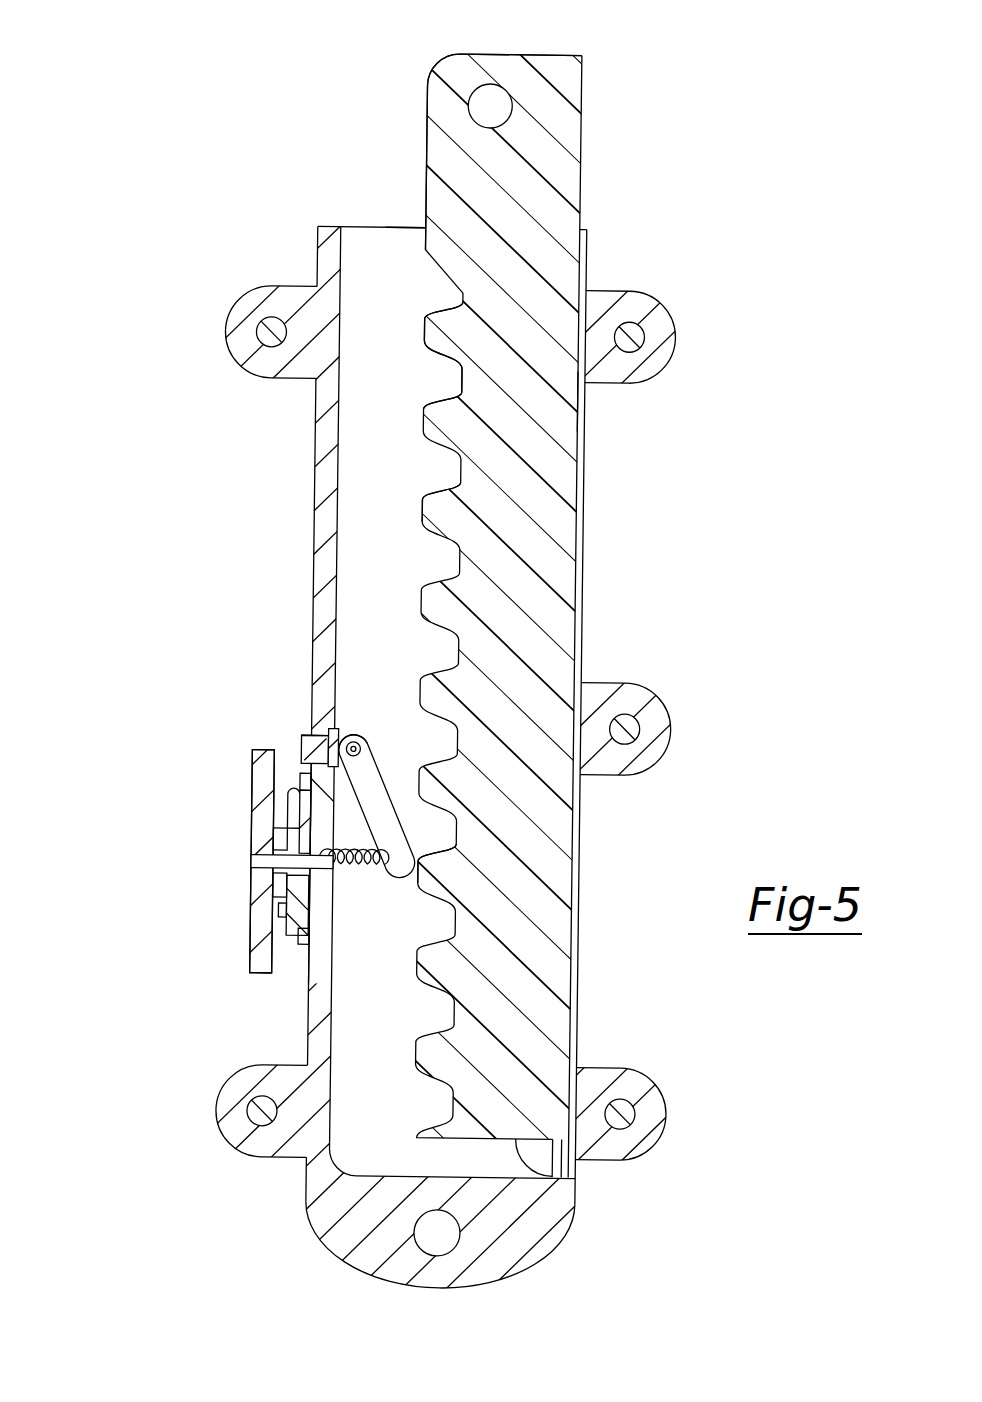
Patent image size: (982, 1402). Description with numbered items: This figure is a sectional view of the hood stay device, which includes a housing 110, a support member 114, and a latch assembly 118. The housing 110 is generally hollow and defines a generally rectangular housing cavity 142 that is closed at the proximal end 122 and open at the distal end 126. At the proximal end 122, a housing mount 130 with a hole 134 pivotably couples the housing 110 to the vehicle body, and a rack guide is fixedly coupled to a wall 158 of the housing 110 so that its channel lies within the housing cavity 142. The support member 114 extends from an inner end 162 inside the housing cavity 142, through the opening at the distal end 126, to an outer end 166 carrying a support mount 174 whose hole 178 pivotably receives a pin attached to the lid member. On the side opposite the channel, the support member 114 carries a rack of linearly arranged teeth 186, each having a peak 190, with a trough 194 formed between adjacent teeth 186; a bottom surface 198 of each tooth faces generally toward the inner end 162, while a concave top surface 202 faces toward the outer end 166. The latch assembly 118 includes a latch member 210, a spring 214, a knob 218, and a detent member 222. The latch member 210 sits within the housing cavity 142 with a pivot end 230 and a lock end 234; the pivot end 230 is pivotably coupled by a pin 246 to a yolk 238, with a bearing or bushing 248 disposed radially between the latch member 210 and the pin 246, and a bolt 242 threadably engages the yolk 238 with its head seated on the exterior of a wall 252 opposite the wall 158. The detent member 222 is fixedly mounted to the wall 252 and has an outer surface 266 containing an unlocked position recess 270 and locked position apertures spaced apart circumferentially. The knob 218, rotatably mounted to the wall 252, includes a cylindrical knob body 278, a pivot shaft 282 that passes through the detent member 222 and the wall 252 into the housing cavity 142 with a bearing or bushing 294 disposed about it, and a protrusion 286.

The housing 110 is at (316, 268).
The support member 114 is at (558, 572).
The latch assembly 118 is at (160, 797).
The proximal end 122 is at (418, 1291).
The distal end 126 is at (400, 226).
The housing mount 130 is at (404, 1257).
The hole 134 is at (466, 1240).
The housing cavity 142 is at (362, 250).
The wall 158 is at (588, 243).
The inner end 162 is at (565, 1172).
The outer end 166 is at (540, 55).
The support mount 174 is at (552, 112).
The hole 178 is at (476, 94).
The teeth 186 is at (424, 514).
The peak 190 is at (426, 332).
The trough 194 is at (572, 402).
The bottom surface 198 is at (440, 358).
The top surface 202 is at (452, 404).
The latch member 210 is at (386, 822).
The spring 214 is at (350, 875).
The knob 218 is at (262, 886).
The detent member 222 is at (312, 975).
The pivot end 230 is at (322, 737).
The lock end 234 is at (430, 878).
The yolk 238 is at (342, 738).
The bolt 242 is at (302, 736).
The pin 246 is at (363, 740).
The bearing or bushing 248 is at (370, 745).
The wall 252 is at (328, 485).
The outer surface 266 is at (287, 938).
The unlocked position recess 270 is at (294, 789).
The knob body 278 is at (265, 977).
The pivot shaft 282 is at (262, 862).
The protrusion 286 is at (288, 800).
The bearing or bushing 294 is at (275, 838).